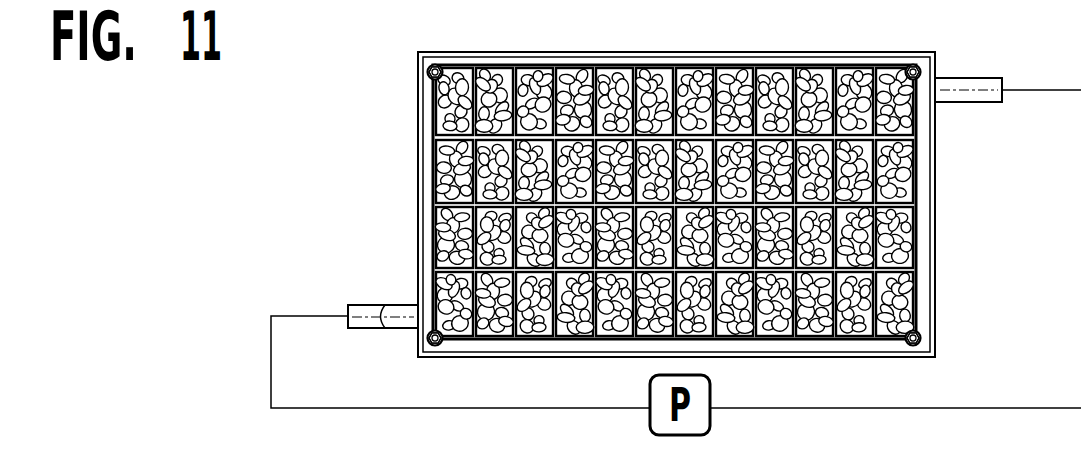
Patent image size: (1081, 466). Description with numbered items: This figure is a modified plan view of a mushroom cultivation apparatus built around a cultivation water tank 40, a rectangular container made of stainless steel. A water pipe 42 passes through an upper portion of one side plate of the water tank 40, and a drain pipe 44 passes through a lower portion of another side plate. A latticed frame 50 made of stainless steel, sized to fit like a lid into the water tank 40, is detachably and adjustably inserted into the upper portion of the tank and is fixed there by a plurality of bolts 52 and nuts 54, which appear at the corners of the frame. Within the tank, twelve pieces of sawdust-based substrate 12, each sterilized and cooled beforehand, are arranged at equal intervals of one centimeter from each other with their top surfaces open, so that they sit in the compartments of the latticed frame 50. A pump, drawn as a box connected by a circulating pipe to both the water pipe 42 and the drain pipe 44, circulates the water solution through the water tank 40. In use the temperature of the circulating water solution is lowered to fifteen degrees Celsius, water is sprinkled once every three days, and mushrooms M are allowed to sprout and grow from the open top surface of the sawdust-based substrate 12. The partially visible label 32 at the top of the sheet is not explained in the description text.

The cultivation water tank 40 is at (416, 138).
The cover plate 32 is at (660, 26).
The sawdust-based substrate 12 is at (455, 174).
The latticed frame 50 is at (882, 240).
The mushrooms M is at (893, 296).
The bolts 52 is at (427, 73).
The nuts 54 is at (674, 205).
The drain pipe 44 is at (379, 303).
The water pipe 42 is at (963, 104).